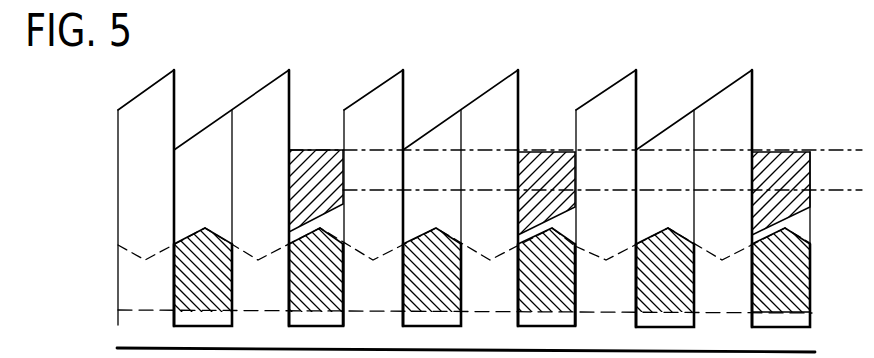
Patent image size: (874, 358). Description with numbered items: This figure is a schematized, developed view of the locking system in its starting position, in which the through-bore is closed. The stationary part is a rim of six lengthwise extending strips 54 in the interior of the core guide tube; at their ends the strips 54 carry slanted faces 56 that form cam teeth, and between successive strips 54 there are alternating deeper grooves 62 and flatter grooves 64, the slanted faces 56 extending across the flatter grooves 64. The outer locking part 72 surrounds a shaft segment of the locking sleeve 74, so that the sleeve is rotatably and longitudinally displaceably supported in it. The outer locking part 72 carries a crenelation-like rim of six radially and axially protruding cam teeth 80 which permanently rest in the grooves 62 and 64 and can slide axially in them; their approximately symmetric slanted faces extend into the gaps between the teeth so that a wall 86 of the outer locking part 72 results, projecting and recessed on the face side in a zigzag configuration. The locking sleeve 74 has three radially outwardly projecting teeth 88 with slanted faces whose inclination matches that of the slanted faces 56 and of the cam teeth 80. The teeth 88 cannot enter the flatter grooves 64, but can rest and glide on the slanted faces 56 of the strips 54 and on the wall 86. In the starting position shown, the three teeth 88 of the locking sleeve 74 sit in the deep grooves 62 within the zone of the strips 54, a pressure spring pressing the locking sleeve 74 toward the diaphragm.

The strips 54 is at (127, 183).
The slanted faces 56 is at (243, 101).
The deeper grooves 62 is at (322, 125).
The flatter grooves 64 is at (438, 133).
The outer locking part 72 is at (132, 270).
The locking sleeve 74 is at (828, 177).
The cam teeth 80 is at (797, 281).
The wall 86 is at (588, 252).
The teeth 88 is at (789, 176).